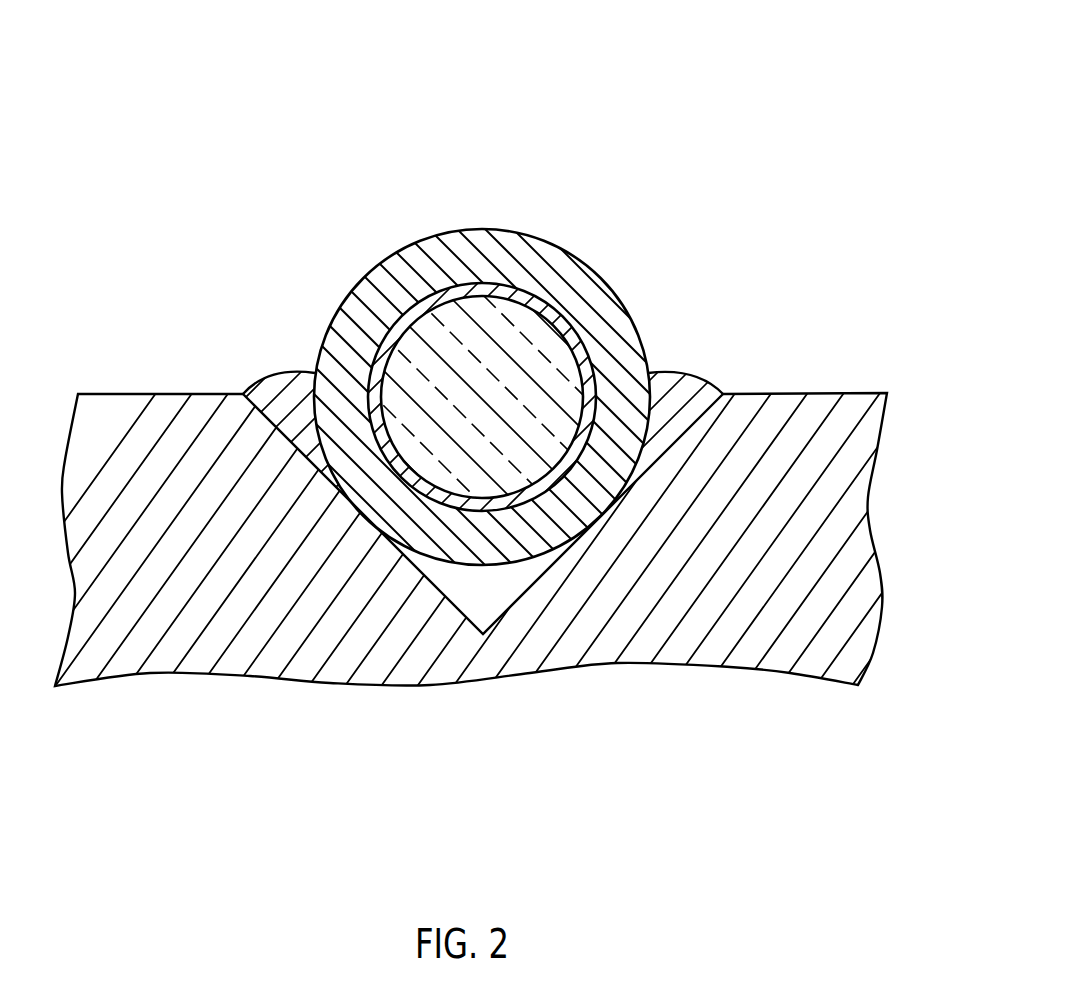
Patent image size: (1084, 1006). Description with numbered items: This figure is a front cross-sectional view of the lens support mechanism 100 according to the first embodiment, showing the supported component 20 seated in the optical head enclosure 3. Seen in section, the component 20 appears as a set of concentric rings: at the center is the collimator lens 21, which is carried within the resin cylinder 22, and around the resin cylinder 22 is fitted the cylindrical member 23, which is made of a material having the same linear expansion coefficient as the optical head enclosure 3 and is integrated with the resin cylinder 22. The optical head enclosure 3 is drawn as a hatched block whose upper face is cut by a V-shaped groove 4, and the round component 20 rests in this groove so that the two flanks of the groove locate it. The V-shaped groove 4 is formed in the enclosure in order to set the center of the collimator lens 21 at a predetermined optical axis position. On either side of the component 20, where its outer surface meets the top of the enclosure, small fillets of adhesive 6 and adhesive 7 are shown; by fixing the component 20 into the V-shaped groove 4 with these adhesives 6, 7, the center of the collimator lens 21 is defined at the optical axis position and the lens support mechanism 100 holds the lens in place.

The lens support mechanism 100 is at (858, 208).
The optical head enclosure 3 is at (708, 662).
The V-shaped groove 4 is at (477, 607).
The adhesive 6 is at (280, 388).
The adhesive 7 is at (692, 387).
The component 20 is at (497, 342).
The collimator lens 21 is at (517, 317).
The resin cylinder 22 is at (365, 303).
The cylindrical member 23 is at (407, 253).